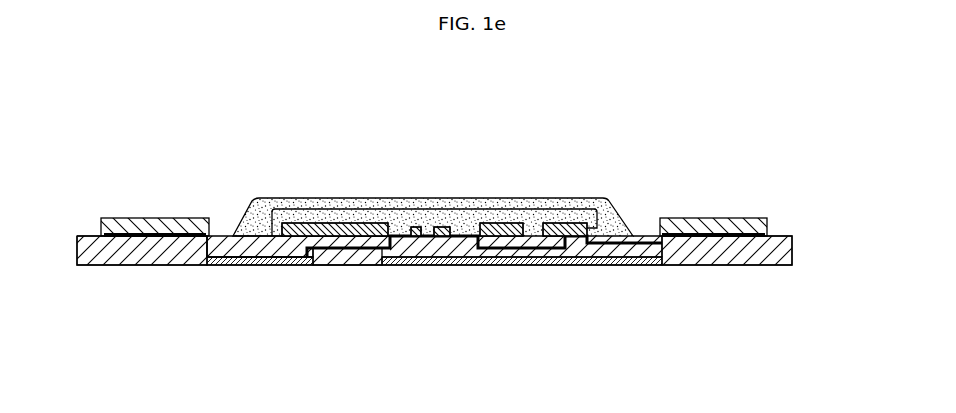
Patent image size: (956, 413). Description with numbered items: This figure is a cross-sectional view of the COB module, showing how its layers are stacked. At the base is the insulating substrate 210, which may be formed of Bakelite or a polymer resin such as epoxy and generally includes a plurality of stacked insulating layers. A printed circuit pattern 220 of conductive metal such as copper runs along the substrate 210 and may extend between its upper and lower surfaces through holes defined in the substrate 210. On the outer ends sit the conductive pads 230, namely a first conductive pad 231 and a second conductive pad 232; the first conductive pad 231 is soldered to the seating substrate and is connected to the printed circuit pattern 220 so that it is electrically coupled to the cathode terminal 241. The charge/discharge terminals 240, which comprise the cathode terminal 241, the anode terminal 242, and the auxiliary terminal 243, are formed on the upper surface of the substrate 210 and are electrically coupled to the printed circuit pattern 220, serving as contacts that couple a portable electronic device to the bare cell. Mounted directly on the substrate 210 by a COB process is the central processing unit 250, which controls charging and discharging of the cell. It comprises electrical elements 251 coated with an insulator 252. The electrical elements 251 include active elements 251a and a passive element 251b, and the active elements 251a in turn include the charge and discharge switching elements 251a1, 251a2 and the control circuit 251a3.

The insulating substrate 210 is at (106, 265).
The printed circuit pattern 220 is at (175, 265).
The conductive pads 230 is at (441, 187).
The first conductive pad 231 is at (147, 230).
The second conductive pad 232 is at (720, 218).
The charge/discharge terminals 240 is at (434, 304).
The cathode terminal 241 is at (268, 236).
The anode terminal 242 is at (570, 284).
The auxiliary terminal 243 is at (442, 236).
The central processing unit 250 is at (468, 174).
The electrical elements 251 is at (287, 200).
The active elements 251a is at (443, 164).
The charge switching element 251a1 is at (572, 187).
The discharge switching element 251a2 is at (501, 224).
The control circuit 251a3 is at (332, 227).
The passive element 251b is at (425, 218).
The insulator 252 is at (618, 199).